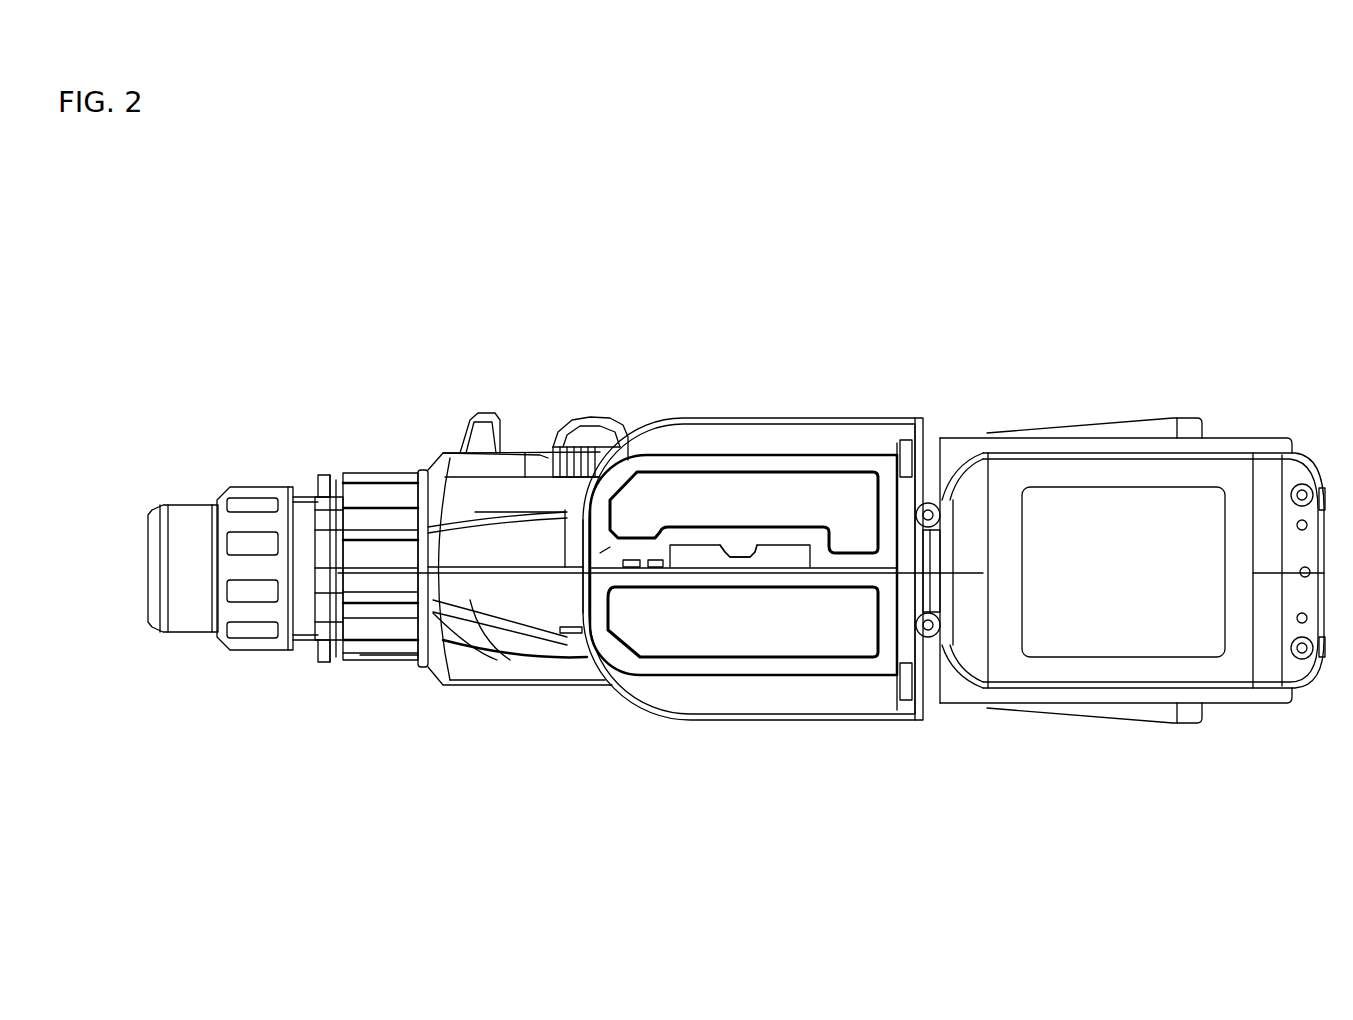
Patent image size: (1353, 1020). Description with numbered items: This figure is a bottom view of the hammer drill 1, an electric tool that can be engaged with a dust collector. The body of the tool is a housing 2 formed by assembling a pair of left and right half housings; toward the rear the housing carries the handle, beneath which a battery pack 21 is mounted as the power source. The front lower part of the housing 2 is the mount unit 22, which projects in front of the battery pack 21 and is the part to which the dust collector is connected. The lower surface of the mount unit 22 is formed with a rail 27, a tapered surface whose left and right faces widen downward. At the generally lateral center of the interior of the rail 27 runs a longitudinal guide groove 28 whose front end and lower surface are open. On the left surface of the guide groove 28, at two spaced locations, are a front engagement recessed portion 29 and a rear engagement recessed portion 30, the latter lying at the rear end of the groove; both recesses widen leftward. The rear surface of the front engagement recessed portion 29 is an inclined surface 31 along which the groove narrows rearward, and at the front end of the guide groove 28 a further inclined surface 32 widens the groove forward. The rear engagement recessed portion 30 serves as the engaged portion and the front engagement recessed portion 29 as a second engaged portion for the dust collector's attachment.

The hammer drill 1 is at (837, 385).
The housing 2 is at (531, 453).
The battery pack 21 is at (1122, 478).
The mount unit 22 is at (747, 438).
The rail 27 is at (795, 667).
The guide groove 28 is at (626, 566).
The front engagement recessed portion 29 is at (688, 553).
The rear engagement recessed portion 30 is at (780, 557).
The inclined surface 31 is at (728, 556).
The inclined surface 32 is at (580, 565).